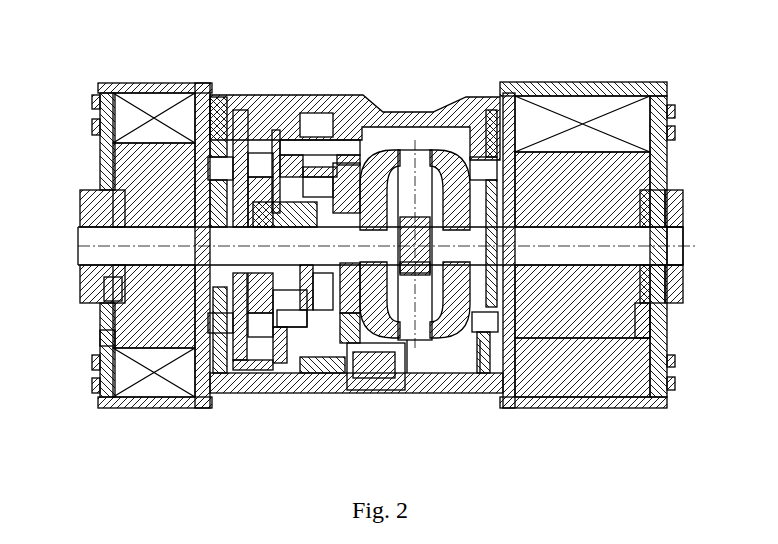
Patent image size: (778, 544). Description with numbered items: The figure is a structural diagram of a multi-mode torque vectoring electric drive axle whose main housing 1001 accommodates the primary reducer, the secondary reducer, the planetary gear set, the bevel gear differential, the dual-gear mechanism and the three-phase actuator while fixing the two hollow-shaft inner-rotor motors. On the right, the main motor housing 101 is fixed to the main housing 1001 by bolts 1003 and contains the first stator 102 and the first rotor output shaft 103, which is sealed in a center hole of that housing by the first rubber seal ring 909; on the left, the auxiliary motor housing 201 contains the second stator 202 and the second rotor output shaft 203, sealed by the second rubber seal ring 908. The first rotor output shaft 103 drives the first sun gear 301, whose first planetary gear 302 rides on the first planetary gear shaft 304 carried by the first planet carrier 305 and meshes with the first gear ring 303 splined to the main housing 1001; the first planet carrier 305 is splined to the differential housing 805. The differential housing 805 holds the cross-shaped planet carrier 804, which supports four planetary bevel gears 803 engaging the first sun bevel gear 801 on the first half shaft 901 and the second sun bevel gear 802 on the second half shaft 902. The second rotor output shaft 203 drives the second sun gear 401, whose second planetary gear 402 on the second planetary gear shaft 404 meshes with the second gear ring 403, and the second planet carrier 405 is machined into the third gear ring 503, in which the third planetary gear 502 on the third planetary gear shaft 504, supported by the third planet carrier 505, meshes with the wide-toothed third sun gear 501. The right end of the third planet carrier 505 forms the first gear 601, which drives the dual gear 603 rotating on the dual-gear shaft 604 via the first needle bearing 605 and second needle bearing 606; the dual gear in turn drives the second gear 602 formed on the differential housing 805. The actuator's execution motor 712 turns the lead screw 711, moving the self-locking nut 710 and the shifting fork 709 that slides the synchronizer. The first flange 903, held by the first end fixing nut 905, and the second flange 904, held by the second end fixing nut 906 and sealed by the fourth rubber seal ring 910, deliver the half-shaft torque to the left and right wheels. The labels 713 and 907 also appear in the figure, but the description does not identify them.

The main motor housing 101 is at (670, 103).
The first stator 102 is at (660, 140).
The first rotor output shaft 103 is at (660, 190).
The auxiliary motor housing 201 is at (98, 103).
The second stator 202 is at (96, 136).
The second rotor output shaft 203 is at (118, 198).
The first sun gear 301 is at (667, 397).
The first planetary gear 302 is at (612, 408).
The first gear ring 303 is at (507, 400).
The first planetary gear shaft 304 is at (575, 140).
The first planet carrier 305 is at (612, 150).
The second sun gear 401 is at (118, 380).
The second planetary gear 402 is at (165, 402).
The second gear ring 403 is at (202, 402).
The second planetary gear shaft 404 is at (193, 150).
The second planet carrier 405 is at (138, 402).
The third sun gear 501 is at (226, 110).
The third planetary gear 502 is at (242, 372).
The third gear ring 503 is at (262, 375).
The third planetary gear shaft 504 is at (272, 380).
The third planet carrier 505 is at (290, 385).
The first gear 601 is at (270, 100).
The second gear 602 is at (430, 125).
The dual gear 603 is at (308, 100).
The dual-gear shaft 604 is at (328, 100).
The first needle bearing 605 is at (292, 100).
The second needle bearing 606 is at (352, 115).
The shifting fork 709 is at (398, 392).
The nut 710 is at (327, 395).
The lead screw 711 is at (370, 395).
The execution motor 712 is at (447, 393).
The top housing plate 713 is at (170, 150).
The first sun bevel gear 801 is at (468, 398).
The second sun bevel gear 802 is at (578, 405).
The planetary bevel gears 803 is at (508, 130).
The cross-shaped planet carrier 804 is at (458, 125).
The differential housing 805 is at (545, 130).
The first half shaft 901 is at (108, 337).
The second half shaft 902 is at (650, 327).
The first flange 903 is at (118, 292).
The second flange 904 is at (667, 283).
The first end fixing nut 905 is at (86, 278).
The second end fixing nut 906 is at (680, 270).
The left bearing cap 907 is at (84, 215).
The second rubber seal ring 908 is at (125, 245).
The first rubber seal ring 909 is at (683, 250).
The fourth rubber seal ring 910 is at (680, 217).
The main housing 1001 is at (413, 197).
The bolts 1003 is at (195, 100).